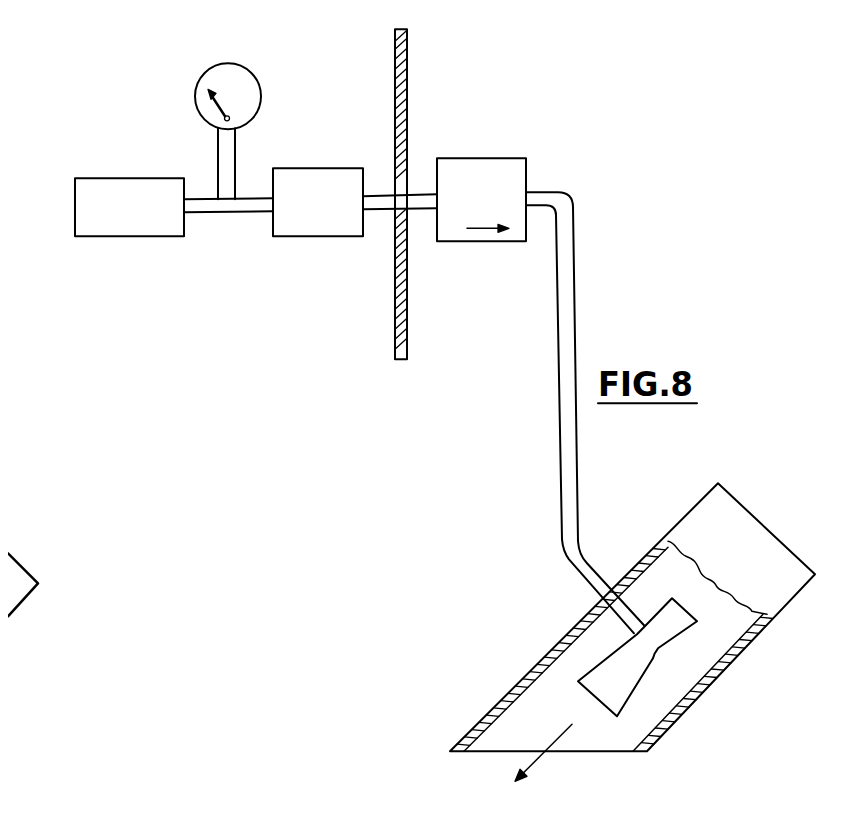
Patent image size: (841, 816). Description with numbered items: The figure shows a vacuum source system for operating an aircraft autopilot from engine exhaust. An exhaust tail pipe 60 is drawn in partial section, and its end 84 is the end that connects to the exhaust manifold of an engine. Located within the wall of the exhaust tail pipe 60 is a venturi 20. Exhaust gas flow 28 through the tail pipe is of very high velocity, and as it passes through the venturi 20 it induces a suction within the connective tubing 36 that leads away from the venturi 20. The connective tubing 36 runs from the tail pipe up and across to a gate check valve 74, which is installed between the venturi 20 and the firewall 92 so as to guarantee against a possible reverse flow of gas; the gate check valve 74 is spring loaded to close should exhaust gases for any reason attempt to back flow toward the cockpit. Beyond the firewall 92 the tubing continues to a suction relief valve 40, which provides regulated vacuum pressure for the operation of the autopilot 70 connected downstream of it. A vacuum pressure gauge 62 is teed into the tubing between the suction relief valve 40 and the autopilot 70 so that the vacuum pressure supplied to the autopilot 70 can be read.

The venturi 20 is at (642, 675).
The exhaust gas flow 28 is at (544, 754).
The connective tubing 36 is at (556, 336).
The suction relief valve 40 is at (303, 167).
The exhaust tail pipe 60 is at (683, 515).
The vacuum pressure gauge 62 is at (258, 80).
The autopilot 70 is at (110, 177).
The gate check valve 74 is at (470, 157).
The end 84 is at (733, 494).
The firewall 92 is at (395, 60).